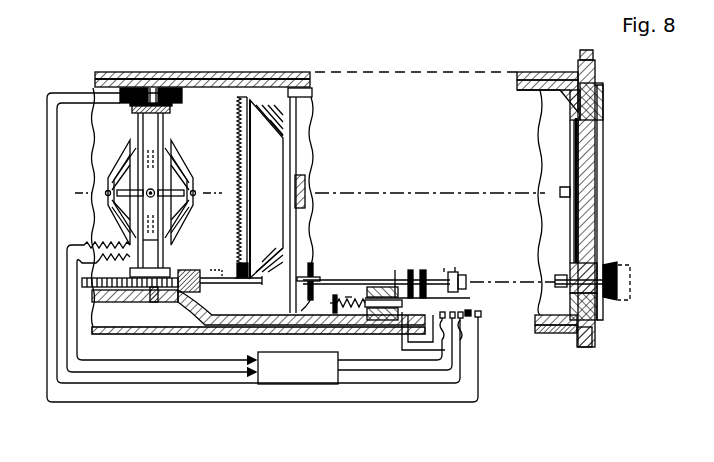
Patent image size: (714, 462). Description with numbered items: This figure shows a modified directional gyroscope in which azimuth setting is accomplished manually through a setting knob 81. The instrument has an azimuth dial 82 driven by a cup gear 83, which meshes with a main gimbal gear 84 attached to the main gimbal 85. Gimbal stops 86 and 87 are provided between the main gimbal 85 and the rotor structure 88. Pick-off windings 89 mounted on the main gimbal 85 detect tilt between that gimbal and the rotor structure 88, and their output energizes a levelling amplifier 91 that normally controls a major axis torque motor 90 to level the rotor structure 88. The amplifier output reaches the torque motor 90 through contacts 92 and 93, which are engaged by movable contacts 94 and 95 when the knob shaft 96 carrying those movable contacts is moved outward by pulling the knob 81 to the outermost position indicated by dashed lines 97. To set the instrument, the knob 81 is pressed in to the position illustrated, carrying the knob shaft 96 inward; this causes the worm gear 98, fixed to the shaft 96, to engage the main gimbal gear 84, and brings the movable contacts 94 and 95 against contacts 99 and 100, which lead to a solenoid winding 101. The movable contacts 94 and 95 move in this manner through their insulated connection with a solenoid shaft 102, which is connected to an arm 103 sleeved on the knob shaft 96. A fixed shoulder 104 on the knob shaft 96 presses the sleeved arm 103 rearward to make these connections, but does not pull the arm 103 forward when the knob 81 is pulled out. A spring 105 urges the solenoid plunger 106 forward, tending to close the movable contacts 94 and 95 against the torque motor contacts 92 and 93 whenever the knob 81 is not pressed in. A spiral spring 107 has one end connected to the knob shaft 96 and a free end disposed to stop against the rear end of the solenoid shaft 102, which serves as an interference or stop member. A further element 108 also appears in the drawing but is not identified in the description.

The setting knob 81 is at (613, 263).
The azimuth dial 82 is at (577, 150).
The cup gear 83 is at (272, 168).
The main gimbal gear 84 is at (180, 274).
The main gimbal 85 is at (152, 122).
The gimbal stop 86 is at (123, 192).
The gimbal stop 87 is at (165, 245).
The rotor structure 88 is at (195, 157).
The pick-off windings 89 is at (140, 132).
The major axis torque motor 90 is at (184, 96).
The levelling amplifier 91 is at (266, 351).
The contact 92 is at (462, 272).
The contact 93 is at (481, 318).
The movable contact 94 is at (422, 282).
The movable contact 95 is at (469, 312).
The knob shaft 96 is at (228, 283).
The dashed lines 97 is at (626, 268).
The worm gear 98 is at (192, 287).
The contact 99 is at (398, 296).
The contact 100 is at (480, 282).
The solenoid winding 101 is at (362, 300).
The solenoid shaft 102 is at (403, 298).
The arm 103 is at (447, 267).
The fixed shoulder 104 is at (455, 267).
The spring 105 is at (348, 297).
The solenoid plunger 106 is at (362, 314).
The spiral spring 107 is at (307, 296).
The rack 108 is at (218, 252).